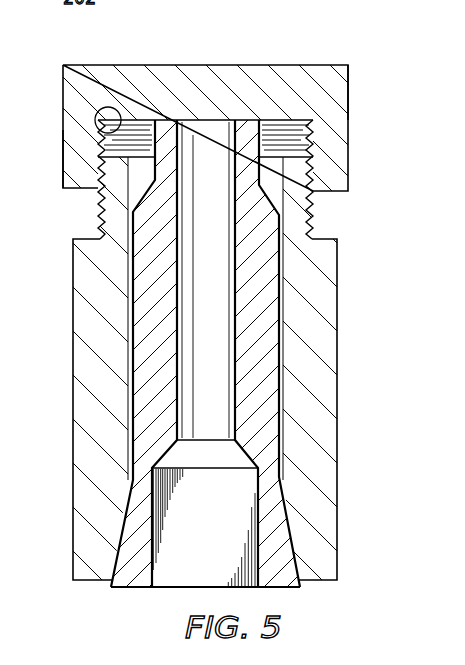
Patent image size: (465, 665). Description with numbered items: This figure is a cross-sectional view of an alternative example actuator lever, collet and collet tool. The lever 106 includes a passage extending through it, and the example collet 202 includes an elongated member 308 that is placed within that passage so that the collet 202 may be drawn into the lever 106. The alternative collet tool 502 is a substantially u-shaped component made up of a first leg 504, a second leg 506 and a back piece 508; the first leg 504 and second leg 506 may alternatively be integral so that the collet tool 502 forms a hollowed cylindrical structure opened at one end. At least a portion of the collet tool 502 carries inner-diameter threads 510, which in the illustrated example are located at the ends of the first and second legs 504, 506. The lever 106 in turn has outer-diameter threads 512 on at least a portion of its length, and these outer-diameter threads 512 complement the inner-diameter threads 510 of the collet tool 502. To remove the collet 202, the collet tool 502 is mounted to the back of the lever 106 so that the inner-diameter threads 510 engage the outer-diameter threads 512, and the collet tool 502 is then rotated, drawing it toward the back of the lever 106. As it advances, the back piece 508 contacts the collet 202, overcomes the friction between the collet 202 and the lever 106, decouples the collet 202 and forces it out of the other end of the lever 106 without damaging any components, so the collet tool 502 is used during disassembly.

The collet tool 502 is at (229, 54).
The back piece 508 is at (349, 90).
The inner-diameter threads 510 is at (95, 120).
The first leg 504 is at (73, 168).
The second leg 506 is at (337, 150).
The outer-diameter threads 512 is at (322, 218).
The elongated member 308 is at (128, 322).
The lever 106 is at (72, 443).
The collet 202 is at (119, 591).